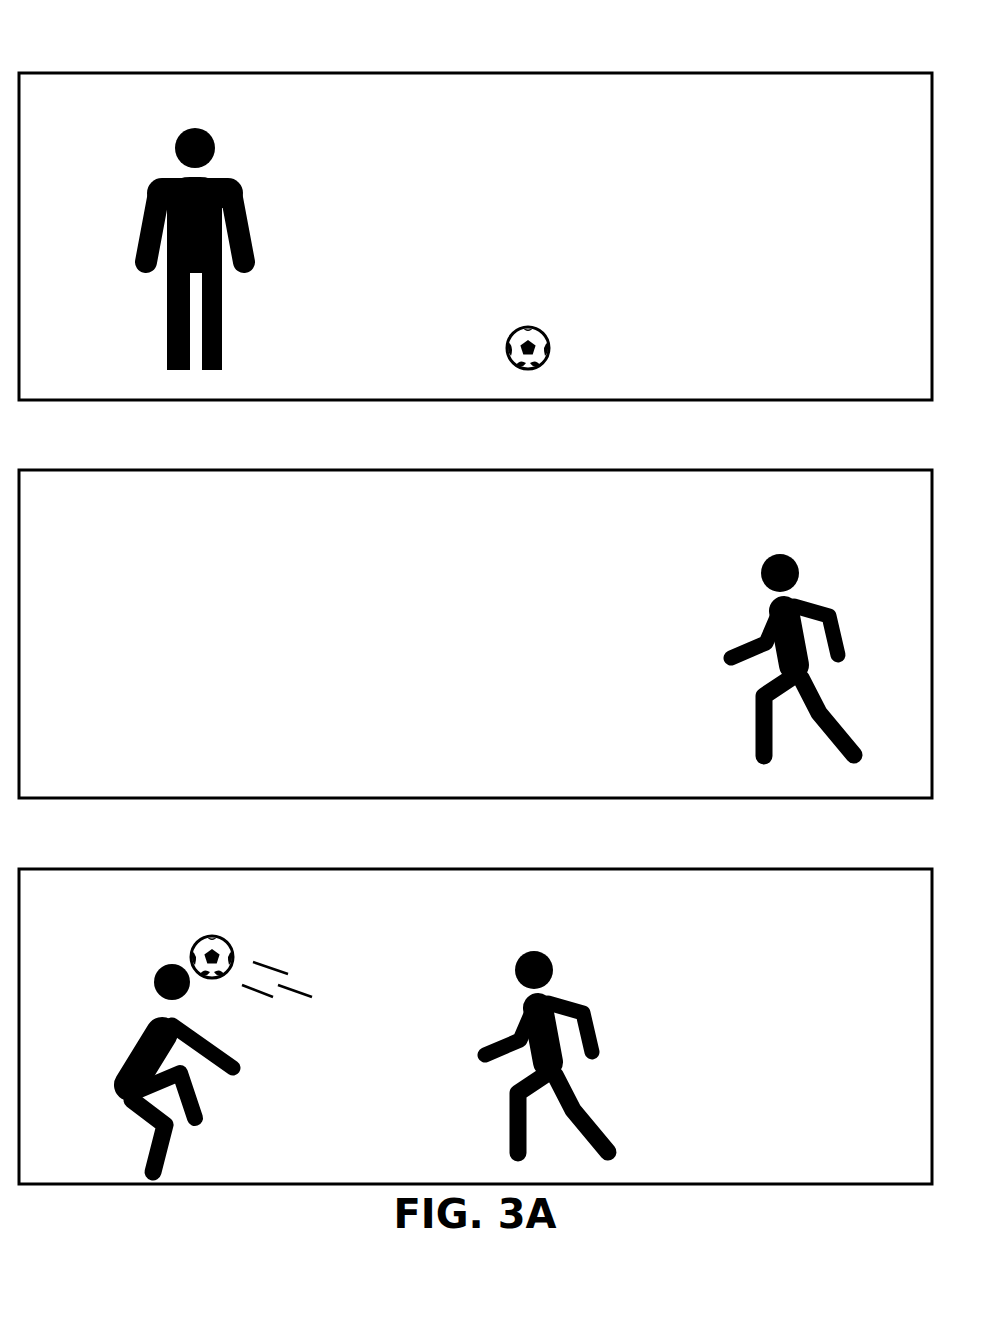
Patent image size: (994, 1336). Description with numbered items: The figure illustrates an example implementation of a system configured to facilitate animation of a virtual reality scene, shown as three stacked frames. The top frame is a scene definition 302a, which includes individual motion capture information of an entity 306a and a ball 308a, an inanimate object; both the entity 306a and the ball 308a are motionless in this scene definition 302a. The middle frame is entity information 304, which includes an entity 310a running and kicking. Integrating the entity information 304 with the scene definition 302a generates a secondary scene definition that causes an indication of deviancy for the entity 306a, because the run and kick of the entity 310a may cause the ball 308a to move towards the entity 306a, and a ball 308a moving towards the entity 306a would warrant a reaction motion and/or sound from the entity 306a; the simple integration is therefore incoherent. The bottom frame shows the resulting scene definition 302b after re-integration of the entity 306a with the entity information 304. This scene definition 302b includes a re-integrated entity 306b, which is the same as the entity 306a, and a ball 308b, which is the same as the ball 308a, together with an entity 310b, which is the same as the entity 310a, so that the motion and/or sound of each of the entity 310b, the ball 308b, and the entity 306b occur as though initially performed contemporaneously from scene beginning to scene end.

The scene definition 302a is at (462, 73).
The entity information 304 is at (465, 470).
The scene definition 302b is at (465, 869).
The entity 306a is at (208, 130).
The re-integrated entity 306b is at (160, 965).
The ball 308a is at (535, 322).
The ball 308b is at (230, 936).
The entity 310a is at (786, 553).
The entity 310b is at (540, 952).